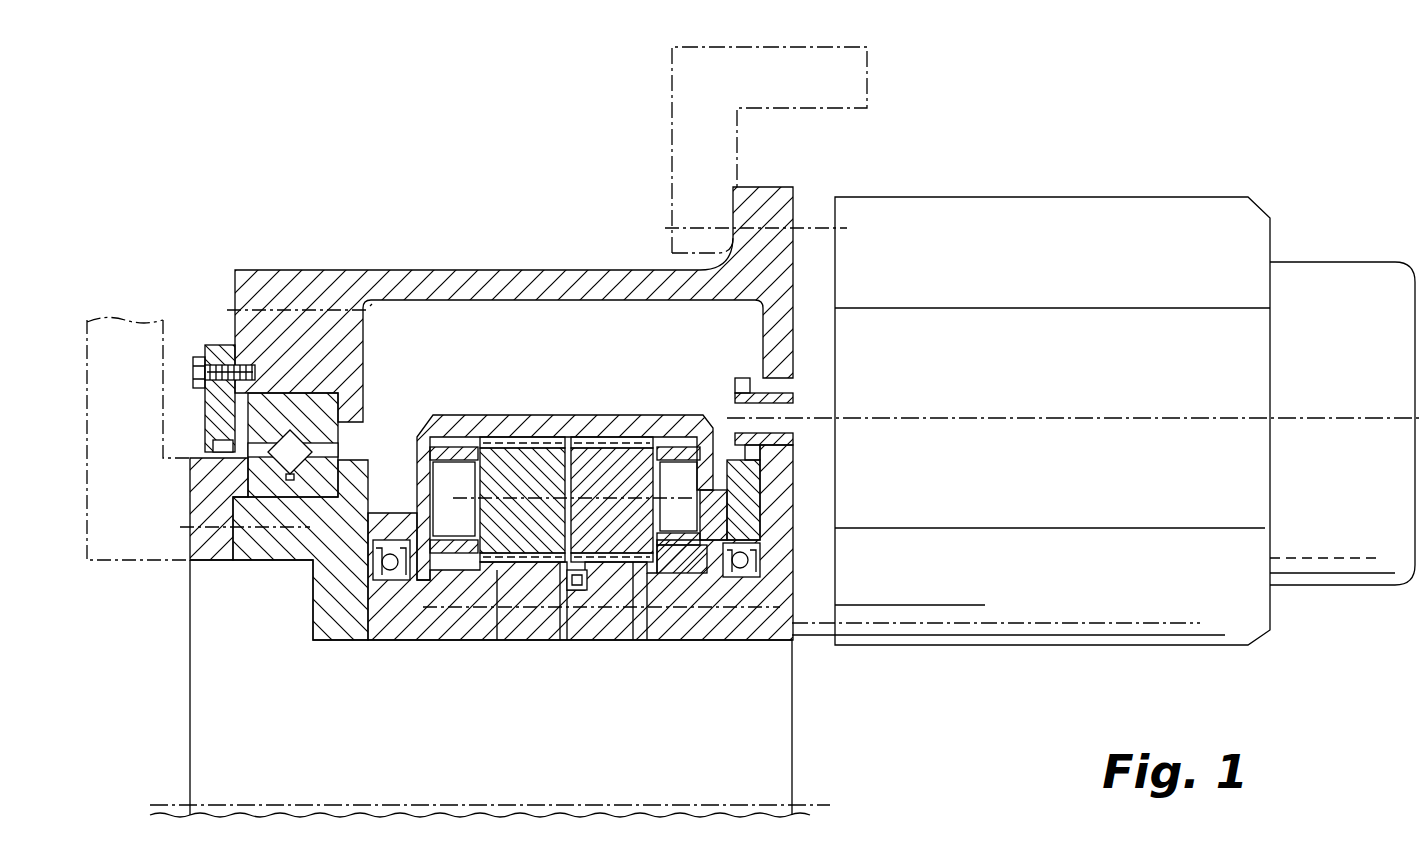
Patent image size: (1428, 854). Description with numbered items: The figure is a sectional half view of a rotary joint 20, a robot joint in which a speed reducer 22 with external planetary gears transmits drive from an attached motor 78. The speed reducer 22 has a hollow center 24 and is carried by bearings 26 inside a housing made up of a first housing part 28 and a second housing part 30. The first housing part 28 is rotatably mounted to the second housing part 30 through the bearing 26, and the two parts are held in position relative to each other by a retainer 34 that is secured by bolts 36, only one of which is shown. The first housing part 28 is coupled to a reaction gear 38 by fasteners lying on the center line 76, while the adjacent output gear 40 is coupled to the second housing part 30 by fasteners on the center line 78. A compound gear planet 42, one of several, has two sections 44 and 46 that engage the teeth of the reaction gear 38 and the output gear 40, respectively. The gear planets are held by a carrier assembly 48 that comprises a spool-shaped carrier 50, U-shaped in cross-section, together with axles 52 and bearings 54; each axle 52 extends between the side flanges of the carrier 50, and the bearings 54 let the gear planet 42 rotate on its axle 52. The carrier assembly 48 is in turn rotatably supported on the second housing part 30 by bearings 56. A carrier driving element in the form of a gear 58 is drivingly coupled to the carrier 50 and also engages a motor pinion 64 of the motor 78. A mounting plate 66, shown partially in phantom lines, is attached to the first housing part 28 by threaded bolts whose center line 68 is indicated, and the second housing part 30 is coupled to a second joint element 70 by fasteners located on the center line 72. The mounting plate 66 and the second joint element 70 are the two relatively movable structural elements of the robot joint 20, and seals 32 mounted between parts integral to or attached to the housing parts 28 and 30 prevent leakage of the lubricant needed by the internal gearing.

The rotary joint 20 is at (594, 160).
The speed reducer 22 is at (488, 340).
The hollow center 24 is at (318, 642).
The bearings 26 is at (334, 393).
The first housing part 28 is at (543, 268).
The second housing part 30 is at (310, 595).
The seals 32 is at (212, 425).
The retainer 34 is at (221, 345).
The bolts 36 is at (253, 368).
The reaction gear 38 is at (652, 570).
The output gear 40 is at (538, 575).
The compound gear planet 42 is at (575, 430).
The gear planet section 44 is at (706, 595).
The gear planet section 46 is at (502, 605).
The carrier assembly 48 is at (424, 573).
The spool-shaped carrier 50 is at (448, 423).
The axles 52 is at (446, 513).
The bearings 54 is at (463, 453).
The bearings 56 is at (376, 548).
The gear 58 is at (765, 512).
The motor pinion 64 is at (737, 383).
The mounting plate 66 is at (672, 58).
The center line 68 is at (819, 228).
The second joint element 70 is at (160, 333).
The center line 72 is at (220, 530).
The center line 76 is at (633, 580).
The motor 78 is at (523, 607).